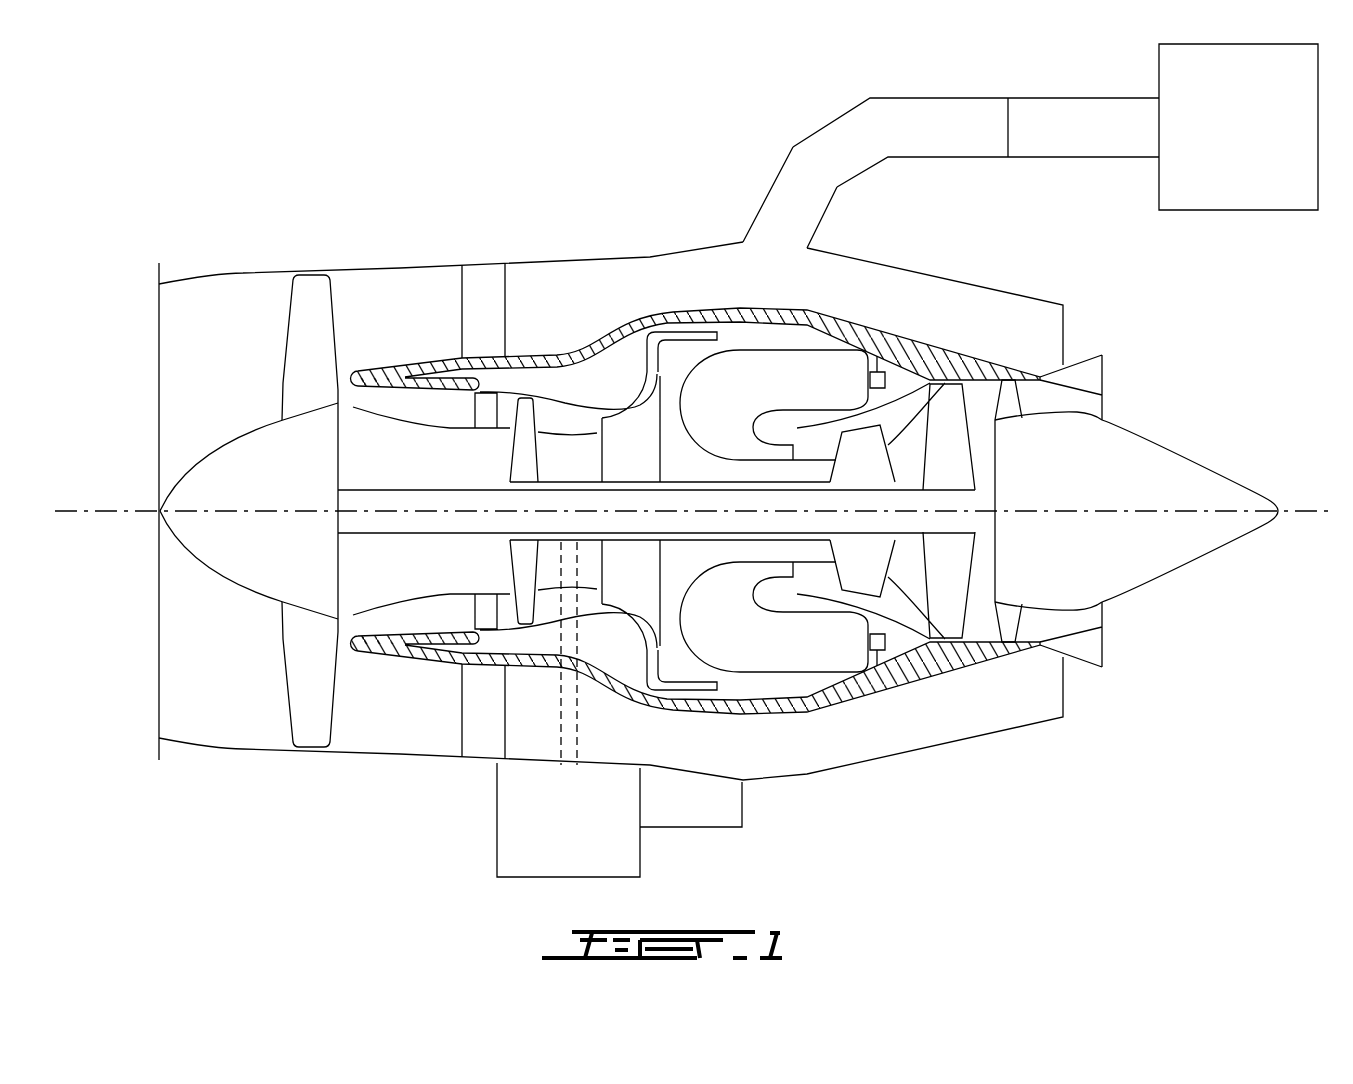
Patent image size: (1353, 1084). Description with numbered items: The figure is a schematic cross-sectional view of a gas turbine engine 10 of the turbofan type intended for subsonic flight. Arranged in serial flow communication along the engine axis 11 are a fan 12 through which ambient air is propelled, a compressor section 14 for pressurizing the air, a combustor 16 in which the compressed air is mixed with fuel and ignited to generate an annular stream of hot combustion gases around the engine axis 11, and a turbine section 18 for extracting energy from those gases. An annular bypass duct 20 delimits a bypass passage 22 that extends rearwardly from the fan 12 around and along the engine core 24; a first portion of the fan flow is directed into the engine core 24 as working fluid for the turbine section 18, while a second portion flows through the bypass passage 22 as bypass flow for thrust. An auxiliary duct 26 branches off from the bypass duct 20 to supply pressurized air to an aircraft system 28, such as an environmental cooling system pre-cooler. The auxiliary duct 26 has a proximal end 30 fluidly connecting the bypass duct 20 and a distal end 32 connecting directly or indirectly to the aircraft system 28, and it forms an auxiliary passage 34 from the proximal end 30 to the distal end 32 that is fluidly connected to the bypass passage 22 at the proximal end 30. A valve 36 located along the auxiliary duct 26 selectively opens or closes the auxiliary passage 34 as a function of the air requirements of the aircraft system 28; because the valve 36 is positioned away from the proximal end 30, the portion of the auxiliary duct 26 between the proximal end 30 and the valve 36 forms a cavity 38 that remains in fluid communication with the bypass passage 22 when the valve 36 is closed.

The gas turbine engine 10 is at (320, 141).
The engine axis 11 is at (1315, 511).
The fan 12 is at (307, 665).
The compressor section 14 is at (557, 412).
The combustor 16 is at (770, 372).
The turbine section 18 is at (907, 578).
The bypass duct 20 is at (241, 270).
The bypass passage 22 is at (583, 318).
The engine core 24 is at (452, 351).
The auxiliary duct 26 is at (813, 119).
The aircraft system 28 is at (1245, 145).
The proximal end 30 is at (745, 242).
The distal end 32 is at (1159, 98).
The auxiliary passage 34 is at (900, 138).
The valve 36 is at (988, 118).
The cavity 38 is at (848, 163).